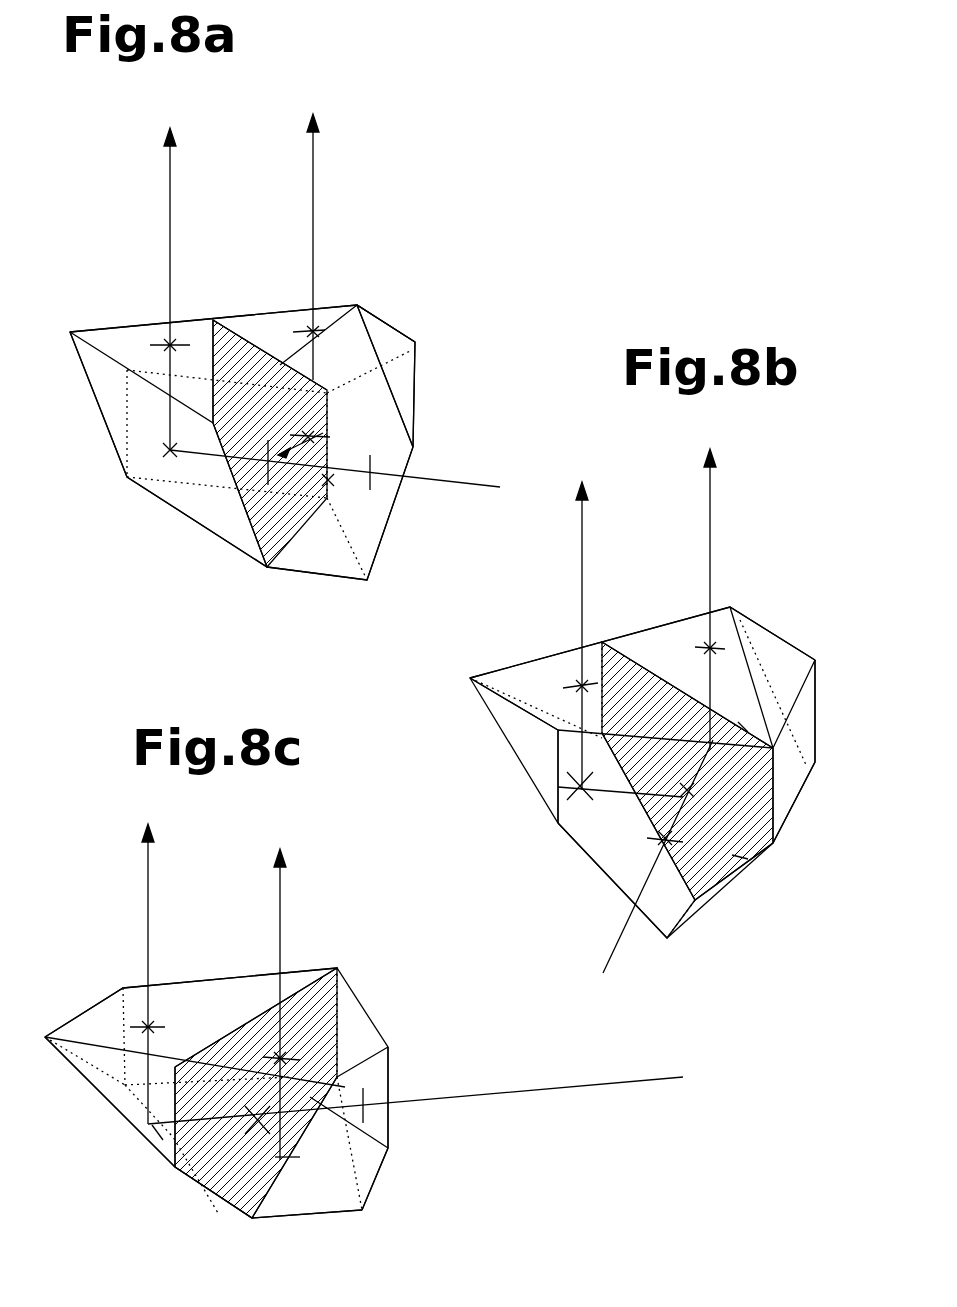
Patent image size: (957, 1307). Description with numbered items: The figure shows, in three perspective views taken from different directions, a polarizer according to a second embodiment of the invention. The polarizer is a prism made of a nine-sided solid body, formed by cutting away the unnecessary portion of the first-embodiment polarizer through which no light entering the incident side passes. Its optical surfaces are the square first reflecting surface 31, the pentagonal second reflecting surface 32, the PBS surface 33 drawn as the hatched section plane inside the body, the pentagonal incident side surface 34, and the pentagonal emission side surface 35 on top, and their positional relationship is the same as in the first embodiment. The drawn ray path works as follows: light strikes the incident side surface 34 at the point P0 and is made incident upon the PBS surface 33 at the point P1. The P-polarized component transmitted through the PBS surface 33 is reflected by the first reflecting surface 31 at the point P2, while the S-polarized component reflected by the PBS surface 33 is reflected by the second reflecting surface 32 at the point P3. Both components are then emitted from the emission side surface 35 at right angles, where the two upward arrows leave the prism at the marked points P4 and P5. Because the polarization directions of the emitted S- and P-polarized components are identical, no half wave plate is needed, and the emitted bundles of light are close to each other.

In FIG. 8A, the first reflecting surface 31 is at (147, 468).
In FIG. 8B, the first reflecting surface 31 is at (793, 760).
In FIG. 8C, the first reflecting surface 31 is at (157, 1160).
In FIG. 8A, the second reflecting surface 32 is at (347, 358).
In FIG. 8B, the second reflecting surface 32 is at (556, 737).
In FIG. 8C, the second reflecting surface 32 is at (318, 1177).
In FIG. 8A, the PBS surface 33 is at (258, 345).
In FIG. 8B, the PBS surface 33 is at (607, 640).
In FIG. 8C, the PBS surface 33 is at (285, 1000).
In FIG. 8A, the incident side surface 34 is at (385, 418).
In FIG. 8B, the incident side surface 34 is at (588, 842).
In FIG. 8C, the incident side surface 34 is at (383, 1122).
In FIG. 8A, the emission side surface 35 is at (165, 330).
In FIG. 8B, the emission side surface 35 is at (753, 667).
In FIG. 8C, the emission side surface 35 is at (225, 990).
In FIG. 8A, the incident point P0 is at (377, 480).
In FIG. 8B, the incident point P0 is at (663, 838).
In FIG. 8C, the incident point P0 is at (370, 1090).
In FIG. 8A, the incidence point on PBS surface P1 is at (328, 478).
In FIG. 8B, the incidence point on PBS surface P1 is at (763, 865).
In FIG. 8C, the incidence point on PBS surface P1 is at (217, 1187).
In FIG. 8A, the reflection point on first reflecting surface P2 is at (173, 452).
In FIG. 8B, the reflection point on first reflecting surface P2 is at (743, 727).
In FIG. 8C, the reflection point on first reflecting surface P2 is at (140, 1139).
In FIG. 8A, the reflection point on second reflecting surface P3 is at (330, 430).
In FIG. 8B, the reflection point on second reflecting surface P3 is at (560, 800).
In FIG. 8C, the reflection point on second reflecting surface P3 is at (262, 1138).
In FIG. 8A, the reference point P4 is at (165, 338).
In FIG. 8B, the reference point P4 is at (715, 640).
In FIG. 8C, the reference point P4 is at (147, 1020).
In FIG. 8A, the reference point P5 is at (308, 325).
In FIG. 8B, the reference point P5 is at (578, 680).
In FIG. 8C, the reference point P5 is at (283, 1055).